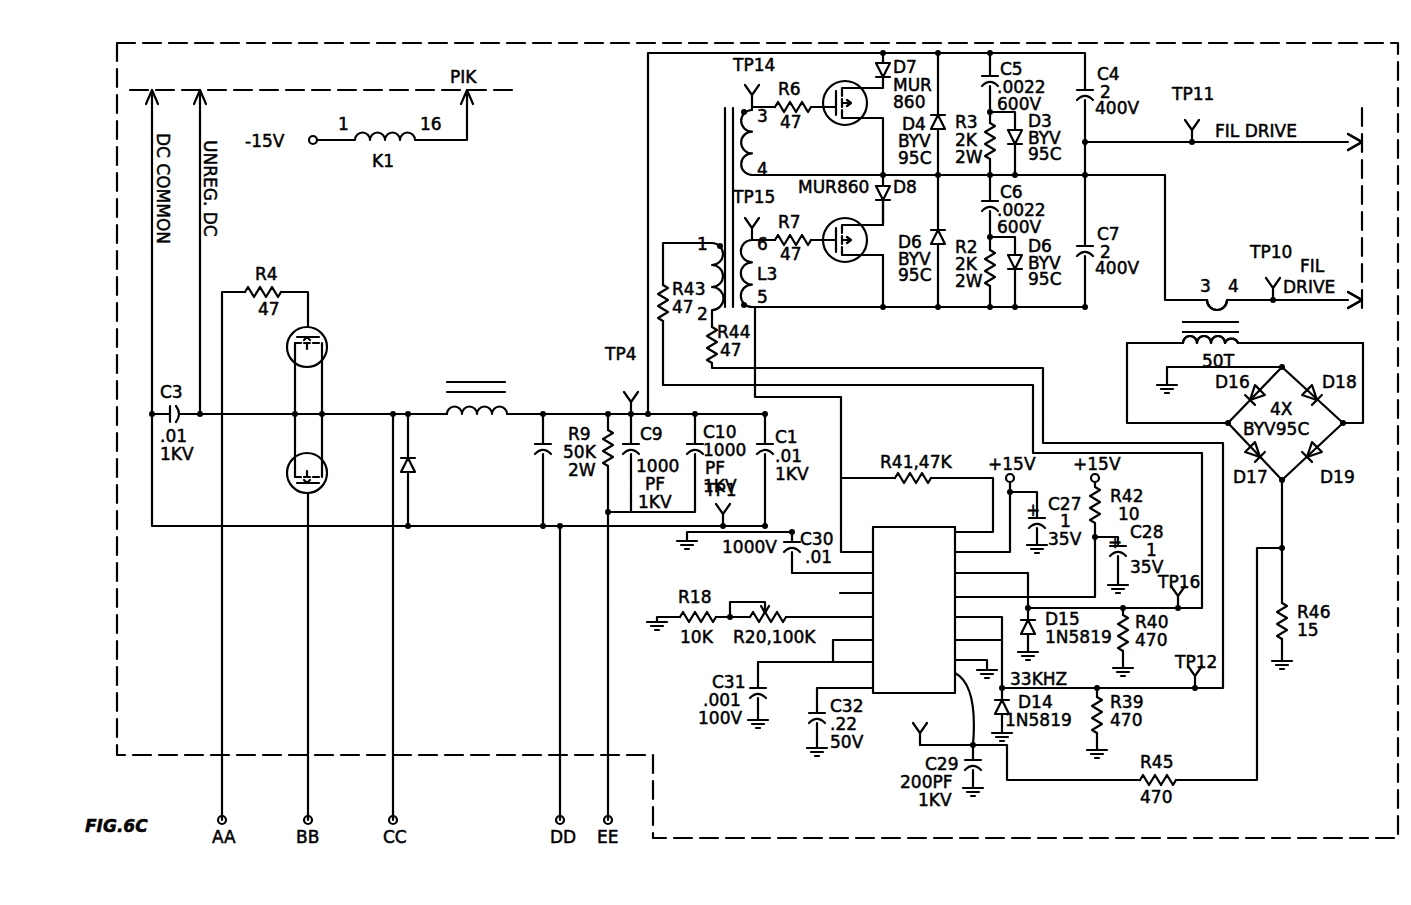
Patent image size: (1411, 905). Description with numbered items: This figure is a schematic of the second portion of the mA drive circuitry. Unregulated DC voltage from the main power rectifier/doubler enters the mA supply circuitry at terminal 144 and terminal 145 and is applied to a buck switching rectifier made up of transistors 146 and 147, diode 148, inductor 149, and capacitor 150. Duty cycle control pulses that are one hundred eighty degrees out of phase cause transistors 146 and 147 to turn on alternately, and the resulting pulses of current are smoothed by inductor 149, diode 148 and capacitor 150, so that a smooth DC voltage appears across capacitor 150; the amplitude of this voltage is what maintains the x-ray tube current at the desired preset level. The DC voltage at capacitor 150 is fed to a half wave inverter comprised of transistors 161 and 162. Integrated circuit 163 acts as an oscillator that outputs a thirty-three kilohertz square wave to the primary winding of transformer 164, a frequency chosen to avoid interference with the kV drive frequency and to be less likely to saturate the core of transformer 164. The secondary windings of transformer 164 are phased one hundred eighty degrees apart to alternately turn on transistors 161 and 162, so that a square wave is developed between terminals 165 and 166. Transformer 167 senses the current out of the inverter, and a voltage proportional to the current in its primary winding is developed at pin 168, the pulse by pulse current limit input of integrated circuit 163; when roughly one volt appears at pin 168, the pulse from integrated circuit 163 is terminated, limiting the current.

The terminal 144 is at (219, 94).
The terminal 145 is at (162, 98).
The transistor 146 is at (340, 335).
The transistor 147 is at (311, 481).
The diode 148 is at (451, 470).
The inductor 149 is at (486, 374).
The capacitor 150 is at (519, 470).
The transistor 161 is at (839, 112).
The transistor 162 is at (845, 249).
The integrated circuit 163 is at (918, 593).
The transformer 164 is at (712, 201).
The terminal 165 is at (1362, 115).
The terminal 166 is at (1368, 263).
The transformer 167 is at (1254, 322).
The pin 168 is at (937, 723).